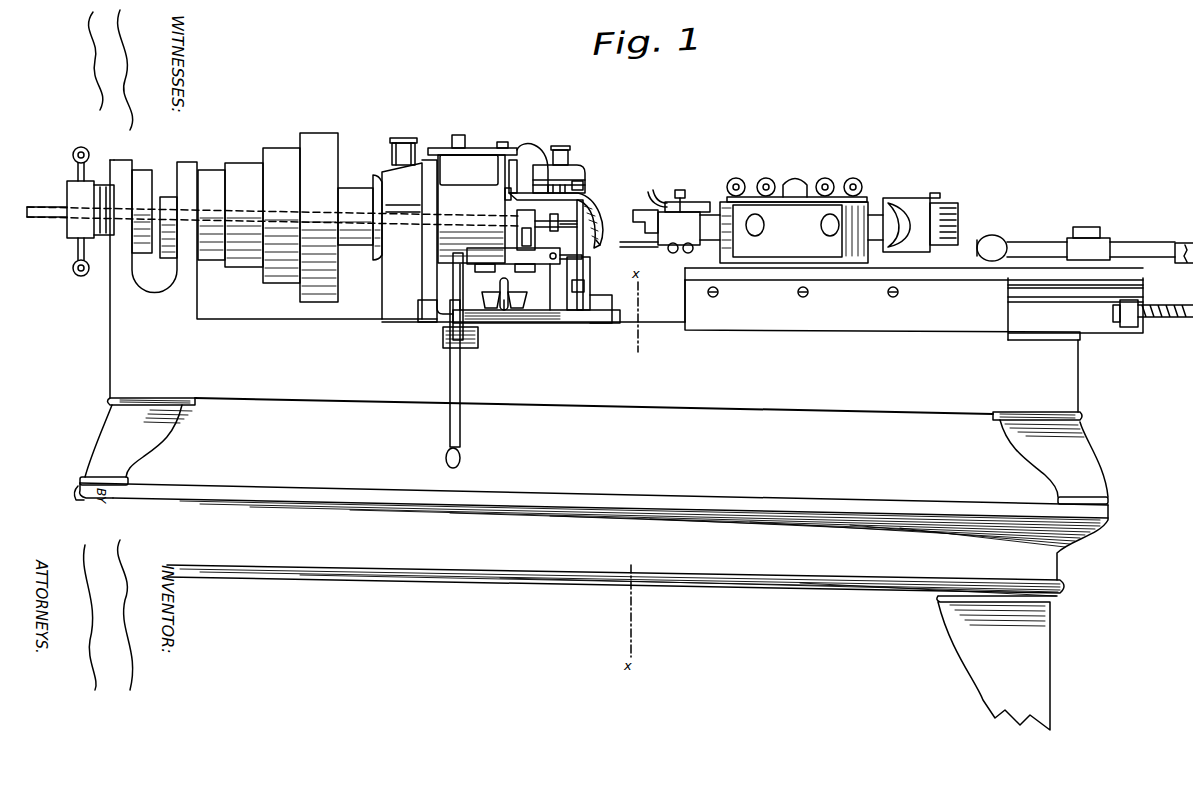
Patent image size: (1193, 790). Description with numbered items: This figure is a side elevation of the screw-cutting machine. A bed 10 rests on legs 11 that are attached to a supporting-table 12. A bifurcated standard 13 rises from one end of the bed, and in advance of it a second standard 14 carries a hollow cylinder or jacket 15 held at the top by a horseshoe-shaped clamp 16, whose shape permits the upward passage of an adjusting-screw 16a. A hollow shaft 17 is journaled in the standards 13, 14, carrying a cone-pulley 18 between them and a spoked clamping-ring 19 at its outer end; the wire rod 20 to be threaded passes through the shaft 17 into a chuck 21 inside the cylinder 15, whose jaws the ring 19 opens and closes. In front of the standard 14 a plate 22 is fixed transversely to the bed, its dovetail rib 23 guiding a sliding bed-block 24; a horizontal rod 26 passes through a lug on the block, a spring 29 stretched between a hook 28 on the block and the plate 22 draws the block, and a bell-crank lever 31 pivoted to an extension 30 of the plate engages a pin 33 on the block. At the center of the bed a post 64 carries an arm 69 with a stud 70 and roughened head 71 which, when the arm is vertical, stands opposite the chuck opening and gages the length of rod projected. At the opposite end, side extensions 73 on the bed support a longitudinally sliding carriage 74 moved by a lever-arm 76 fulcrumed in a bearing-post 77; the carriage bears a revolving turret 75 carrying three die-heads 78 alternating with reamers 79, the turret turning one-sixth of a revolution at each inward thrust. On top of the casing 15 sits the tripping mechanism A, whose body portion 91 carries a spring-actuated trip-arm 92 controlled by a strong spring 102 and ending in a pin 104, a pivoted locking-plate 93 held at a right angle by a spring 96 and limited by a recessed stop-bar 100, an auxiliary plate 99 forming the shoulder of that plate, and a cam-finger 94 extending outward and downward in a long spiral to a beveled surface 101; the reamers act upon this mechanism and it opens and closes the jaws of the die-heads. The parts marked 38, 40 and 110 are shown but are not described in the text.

The bed 10 is at (595, 290).
The legs 11 is at (594, 454).
The supporting-table 12 is at (591, 606).
The standard 13 is at (246, 239).
The second perpendicular standard 14 is at (402, 241).
The hollow cylinder or jacket 15 is at (471, 209).
The horseshoe-shaped clamp 16 is at (385, 172).
The adjusting-screw 16a is at (398, 141).
The hollow shaft 17 is at (163, 196).
The cone-pulley 18 is at (290, 217).
The spoked clamping-ring 19 is at (67, 188).
The wire rod 20 is at (60, 228).
The chuck 21 is at (511, 198).
The plate 22 is at (536, 318).
The dovetail lengthwise rib 23 is at (510, 292).
The bed-block 24 is at (505, 287).
The horizontal rod 26 is at (513, 260).
The hook or stud 28 is at (503, 312).
The coil or spiral spring 29 is at (520, 306).
The extension 30 is at (480, 340).
The elbow or bell-crank lever 31 is at (449, 372).
The pin 33 is at (452, 290).
The rod 38 is at (583, 258).
The sleeve 40 is at (532, 220).
The post 64 is at (589, 290).
The arm 69 is at (583, 240).
The stud 70 is at (565, 230).
The head 71 is at (556, 214).
The side extensions 73 is at (939, 309).
The carriage 74 is at (914, 294).
The revolving turret 75 is at (801, 220).
The lever-arm 76 is at (1132, 255).
The bearing-post 77 is at (992, 236).
The die-heads 78 is at (920, 216).
The reamers or screw-machine drills 79 is at (670, 221).
The body portion 91 is at (545, 137).
The trip-arm 92 is at (521, 176).
The locking-plate 93 is at (585, 186).
The cam-finger 94 is at (600, 205).
The spring 96 is at (566, 150).
The auxiliary plate 99 is at (568, 176).
The recessed stop-bar 100 is at (578, 180).
The beveled surface 101 is at (601, 237).
The spring 102 is at (432, 146).
The pin or stud 104 is at (559, 177).
The hand wheel 110 is at (104, 178).
The tripping mechanism A is at (527, 128).